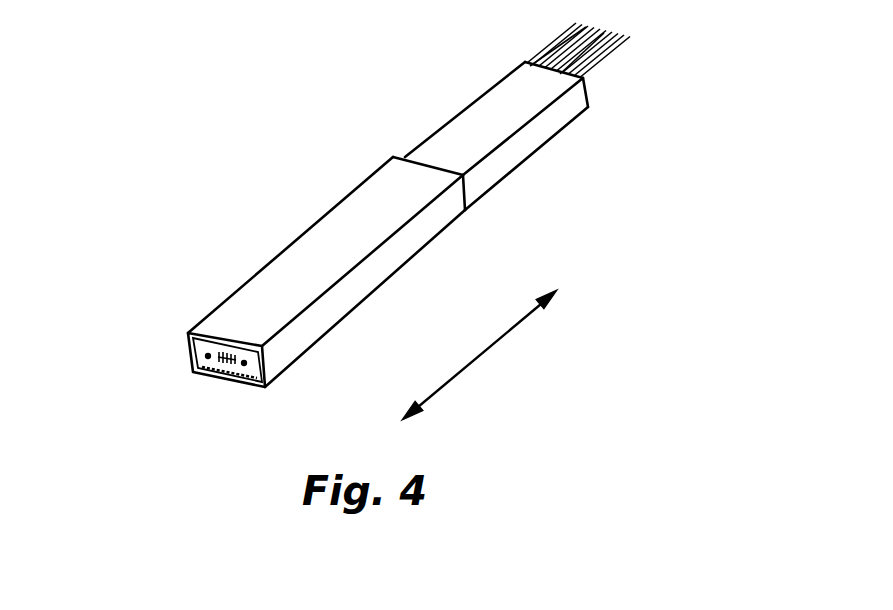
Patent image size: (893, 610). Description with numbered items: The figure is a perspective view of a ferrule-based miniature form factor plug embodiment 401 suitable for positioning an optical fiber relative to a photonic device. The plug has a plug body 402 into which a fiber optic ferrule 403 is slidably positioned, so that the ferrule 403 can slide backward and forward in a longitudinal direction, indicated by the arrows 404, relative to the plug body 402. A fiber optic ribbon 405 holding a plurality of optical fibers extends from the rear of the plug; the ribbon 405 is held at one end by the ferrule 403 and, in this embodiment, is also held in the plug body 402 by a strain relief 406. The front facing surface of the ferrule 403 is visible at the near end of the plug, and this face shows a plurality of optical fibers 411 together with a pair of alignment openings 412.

The miniature form factor plug embodiment 401 is at (384, 237).
The plug body 402 is at (417, 233).
The fiber optic ferrule 403 is at (250, 368).
The arrows 404 is at (512, 330).
The fiber optic ribbon 405 is at (597, 57).
The strain relief 406 is at (537, 132).
The optical fibers 411 is at (217, 358).
The alignment openings 412 is at (244, 363).